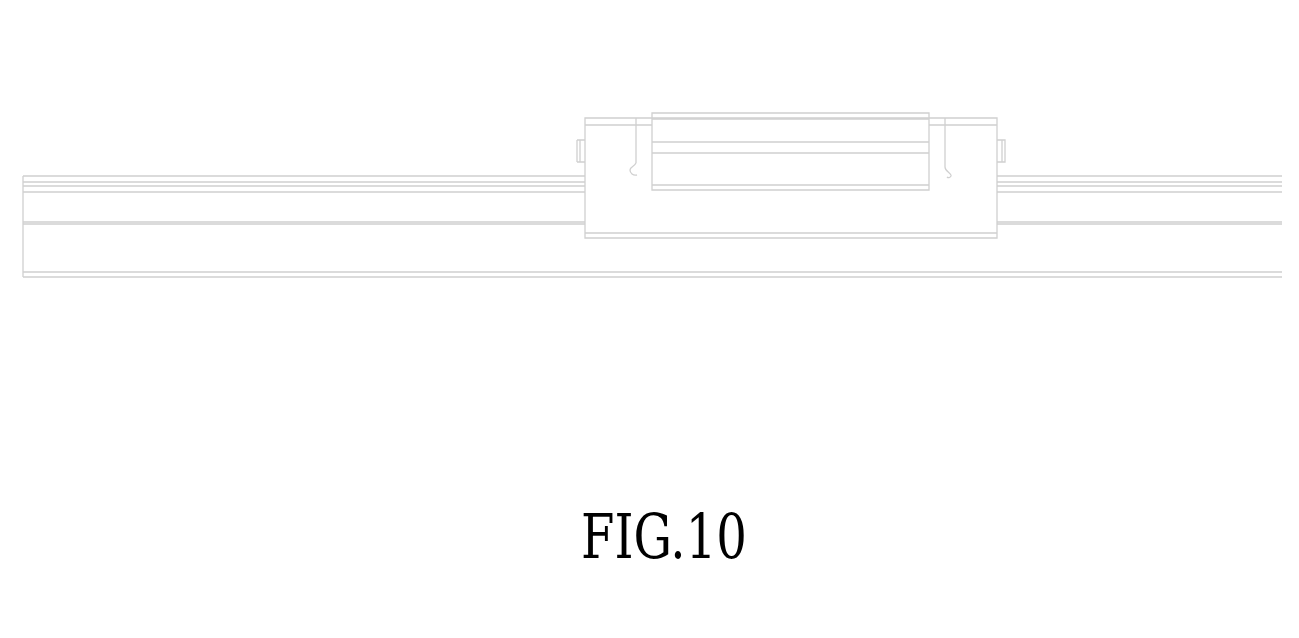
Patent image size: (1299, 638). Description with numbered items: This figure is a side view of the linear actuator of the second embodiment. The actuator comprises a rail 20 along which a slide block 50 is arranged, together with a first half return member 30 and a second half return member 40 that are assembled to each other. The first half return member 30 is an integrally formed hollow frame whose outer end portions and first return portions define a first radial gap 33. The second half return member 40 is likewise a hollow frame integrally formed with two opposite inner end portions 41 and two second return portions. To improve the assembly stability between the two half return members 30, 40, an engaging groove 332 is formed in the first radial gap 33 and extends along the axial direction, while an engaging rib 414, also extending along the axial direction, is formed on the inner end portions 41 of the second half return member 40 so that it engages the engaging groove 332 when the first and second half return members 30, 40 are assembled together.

The rail 20 is at (323, 159).
The first half return member 30 is at (600, 102).
The first radial gap 33 is at (637, 158).
The engaging groove 332 is at (636, 169).
The second half return member 40 is at (646, 100).
The inner end portions 41 is at (643, 138).
The engaging rib 414 is at (637, 177).
The slide block 50 is at (762, 96).